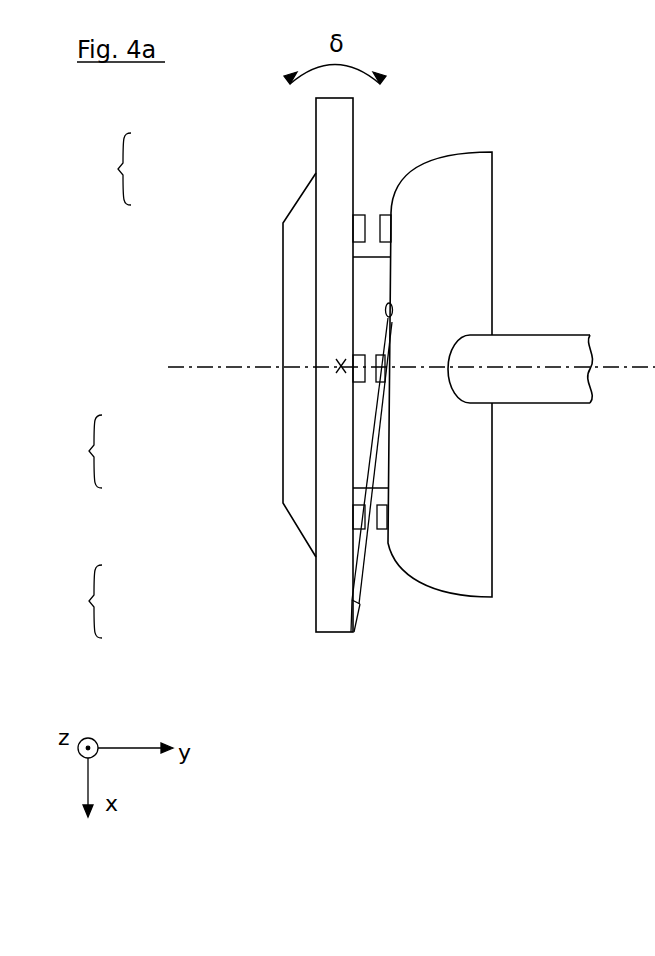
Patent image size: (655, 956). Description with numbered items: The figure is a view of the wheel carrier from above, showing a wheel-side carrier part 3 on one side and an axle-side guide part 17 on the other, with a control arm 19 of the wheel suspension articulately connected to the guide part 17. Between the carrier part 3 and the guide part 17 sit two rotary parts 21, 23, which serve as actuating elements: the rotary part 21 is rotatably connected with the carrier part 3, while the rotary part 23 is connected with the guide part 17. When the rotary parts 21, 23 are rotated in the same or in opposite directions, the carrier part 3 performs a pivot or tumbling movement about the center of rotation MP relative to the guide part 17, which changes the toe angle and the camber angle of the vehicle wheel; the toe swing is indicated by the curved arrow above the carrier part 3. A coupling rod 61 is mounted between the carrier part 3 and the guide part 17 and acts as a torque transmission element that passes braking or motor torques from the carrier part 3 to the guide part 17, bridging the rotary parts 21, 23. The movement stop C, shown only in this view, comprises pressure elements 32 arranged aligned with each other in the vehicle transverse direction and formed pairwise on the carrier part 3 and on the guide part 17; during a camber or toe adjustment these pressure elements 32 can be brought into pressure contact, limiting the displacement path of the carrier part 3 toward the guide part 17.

The carrier part 3 is at (316, 125).
The guide part 17 is at (492, 167).
The control arm 19 is at (575, 335).
The rotary part 21 is at (502, 349).
The rotary part 23 is at (378, 290).
The pressure elements 32 is at (355, 220).
The coupling rod 61 is at (380, 438).
The movement stop C is at (98, 385).
The center of rotation MP is at (340, 365).